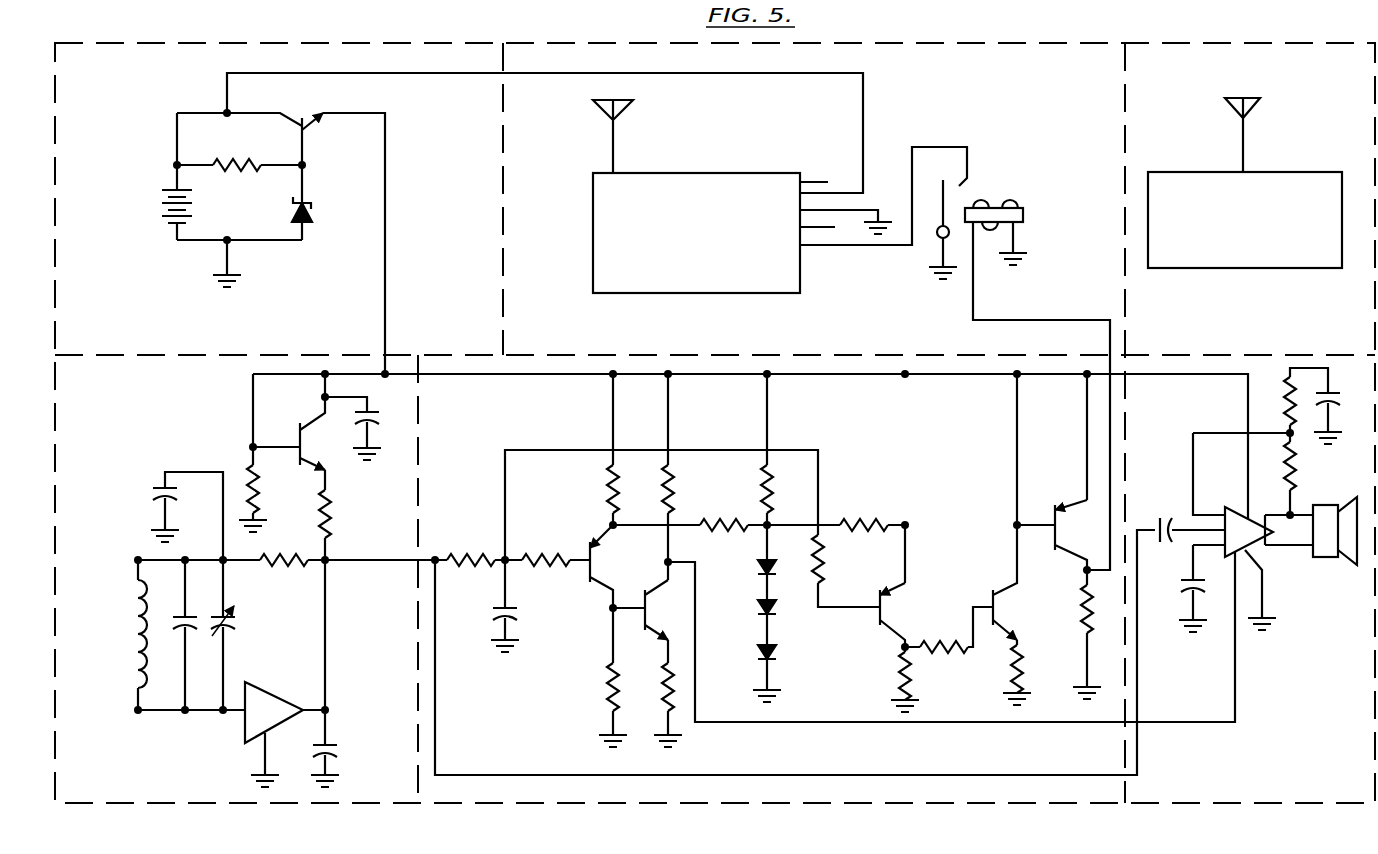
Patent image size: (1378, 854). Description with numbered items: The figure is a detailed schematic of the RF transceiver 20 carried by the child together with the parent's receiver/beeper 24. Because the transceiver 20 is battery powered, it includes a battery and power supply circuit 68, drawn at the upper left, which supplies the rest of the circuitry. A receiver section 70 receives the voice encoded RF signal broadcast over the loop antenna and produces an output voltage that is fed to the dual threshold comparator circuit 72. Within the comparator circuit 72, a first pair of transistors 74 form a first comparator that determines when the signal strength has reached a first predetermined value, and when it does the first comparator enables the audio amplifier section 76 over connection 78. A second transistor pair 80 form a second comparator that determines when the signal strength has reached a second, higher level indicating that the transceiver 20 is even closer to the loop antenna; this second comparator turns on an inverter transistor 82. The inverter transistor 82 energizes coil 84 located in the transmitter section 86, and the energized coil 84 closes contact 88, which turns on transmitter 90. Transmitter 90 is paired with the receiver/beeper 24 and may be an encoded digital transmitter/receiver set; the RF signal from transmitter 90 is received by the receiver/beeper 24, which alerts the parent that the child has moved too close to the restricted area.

The RF transceiver 20 is at (1150, 30).
The receiver/beeper 24 is at (1302, 172).
The battery and power supply circuit 68 is at (328, 60).
The receiver section 70 is at (218, 768).
The dual threshold comparator circuit 72 is at (858, 607).
The first pair of transistors 74 is at (592, 517).
The audio amplifier section 76 is at (1352, 757).
The connection 78 is at (1237, 712).
The second transistor pair 80 is at (1000, 488).
The inverter transistor 82 is at (1063, 490).
The coil 84 is at (1025, 197).
The transmitter section 86 is at (827, 290).
The contact 88 is at (950, 175).
The transmitter 90 is at (592, 267).